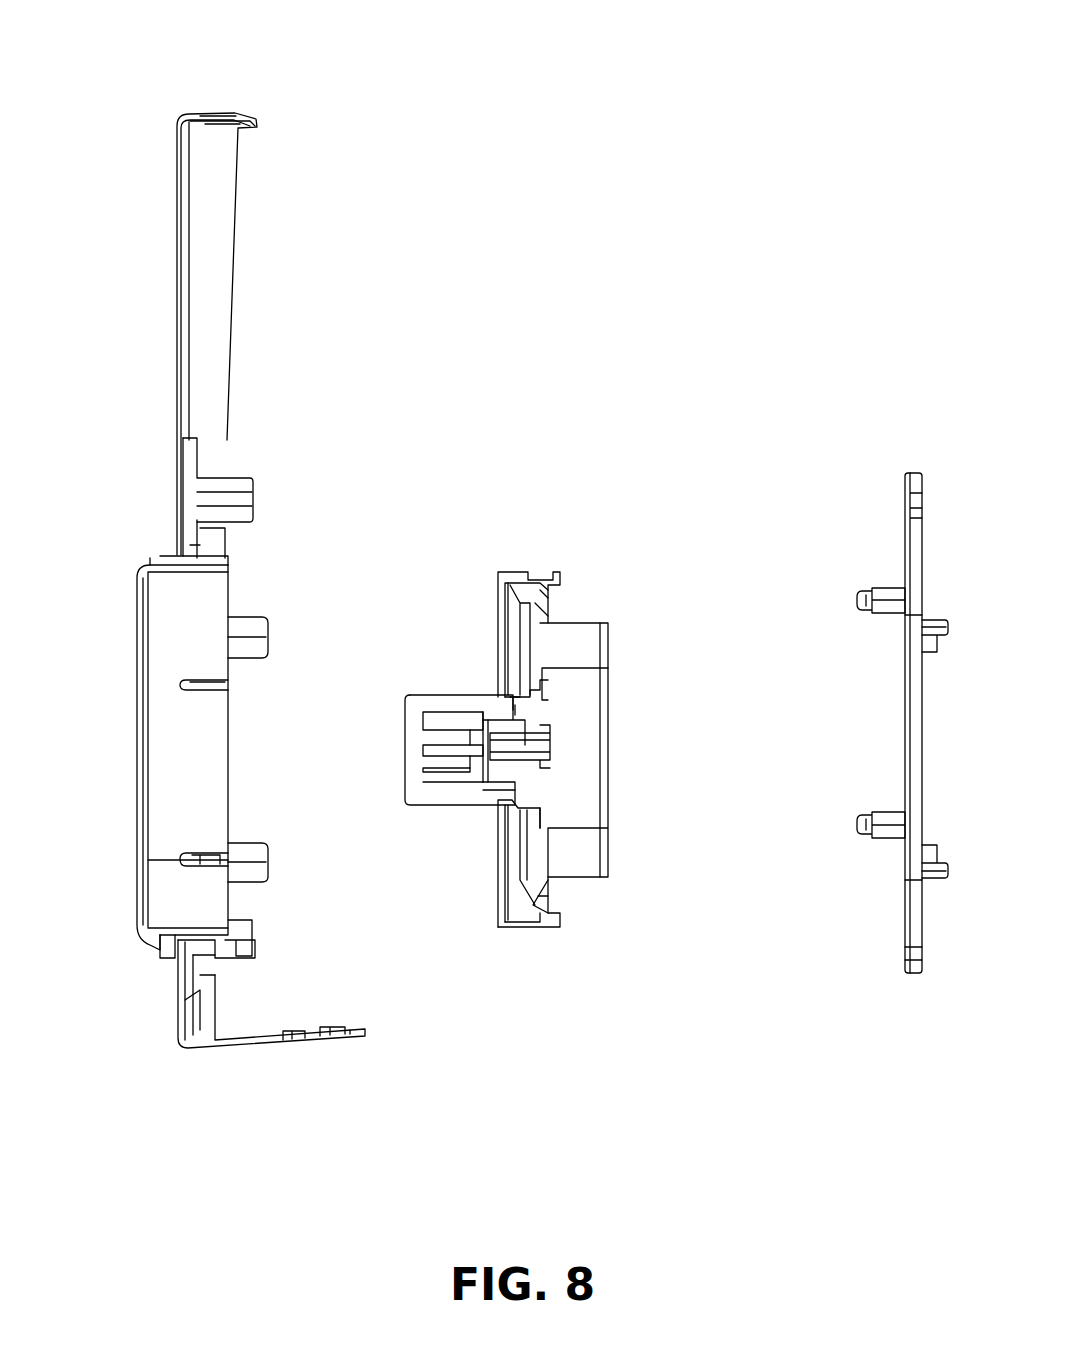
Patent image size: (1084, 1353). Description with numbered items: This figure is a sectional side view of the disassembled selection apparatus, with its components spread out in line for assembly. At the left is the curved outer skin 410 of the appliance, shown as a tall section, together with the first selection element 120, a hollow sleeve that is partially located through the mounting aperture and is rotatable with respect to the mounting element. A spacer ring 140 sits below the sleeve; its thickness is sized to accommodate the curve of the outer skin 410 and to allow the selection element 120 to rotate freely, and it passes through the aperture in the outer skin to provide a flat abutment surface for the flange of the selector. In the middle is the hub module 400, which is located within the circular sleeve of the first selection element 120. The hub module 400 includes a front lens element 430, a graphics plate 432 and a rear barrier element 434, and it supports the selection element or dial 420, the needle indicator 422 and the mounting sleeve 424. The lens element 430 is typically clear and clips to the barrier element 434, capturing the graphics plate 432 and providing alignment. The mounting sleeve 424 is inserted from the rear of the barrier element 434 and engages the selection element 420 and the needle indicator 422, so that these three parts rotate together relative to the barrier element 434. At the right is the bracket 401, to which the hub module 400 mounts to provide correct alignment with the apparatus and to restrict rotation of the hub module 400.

The curved outer skin 410 is at (213, 160).
The first selection element 120 is at (192, 760).
The spacer ring 140 is at (175, 945).
The hub module 400 is at (502, 476).
The bracket 401 is at (908, 570).
The selection element 420 is at (418, 700).
The needle indicator 422 is at (500, 690).
The mounting sleeve 424 is at (548, 748).
The front lens element 430 is at (500, 858).
The graphics plate 432 is at (531, 645).
The rear barrier element 434 is at (600, 638).